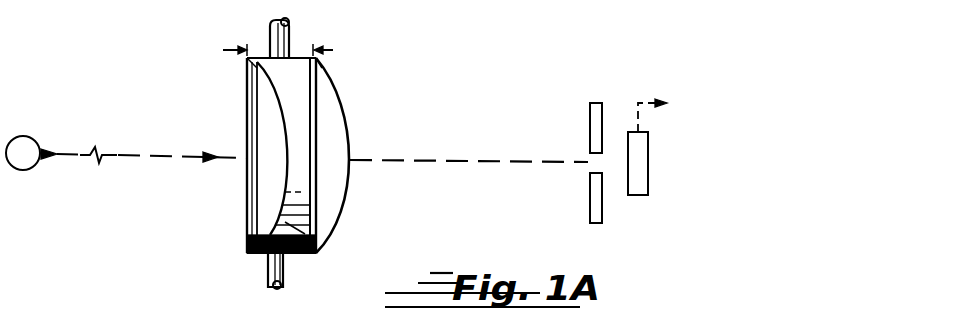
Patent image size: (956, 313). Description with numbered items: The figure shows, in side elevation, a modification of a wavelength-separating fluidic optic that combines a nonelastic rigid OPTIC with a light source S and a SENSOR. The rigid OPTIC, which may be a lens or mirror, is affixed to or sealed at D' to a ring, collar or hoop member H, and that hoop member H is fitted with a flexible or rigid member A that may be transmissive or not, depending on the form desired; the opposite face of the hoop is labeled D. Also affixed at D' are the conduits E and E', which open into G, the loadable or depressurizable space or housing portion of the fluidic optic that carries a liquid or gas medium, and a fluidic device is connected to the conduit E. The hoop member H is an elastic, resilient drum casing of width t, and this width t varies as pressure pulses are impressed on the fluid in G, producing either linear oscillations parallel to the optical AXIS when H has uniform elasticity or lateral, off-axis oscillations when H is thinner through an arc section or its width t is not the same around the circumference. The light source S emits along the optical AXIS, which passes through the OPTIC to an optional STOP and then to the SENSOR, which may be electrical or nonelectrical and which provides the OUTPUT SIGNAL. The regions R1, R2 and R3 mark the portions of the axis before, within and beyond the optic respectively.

The light source S is at (23, 153).
The optical axis AXIS is at (314, 148).
The rigid optic OPTIC is at (323, 100).
The loadable or depressurizable space G is at (268, 122).
The width of member H t is at (268, 50).
The conduit E' is at (296, 38).
The conduit E is at (289, 272).
The left wall D is at (233, 205).
The sealing location D' is at (347, 225).
The flexible or rigid member A is at (247, 232).
The hoop member H is at (316, 245).
The optional stop STOP is at (602, 222).
The sensor SENSOR is at (648, 188).
The output signal (optional) OUTPUT SIGNAL is at (725, 105).
The region 1 R1 is at (124, 302).
The region 2 R2 is at (254, 302).
The region 3 R3 is at (369, 301).